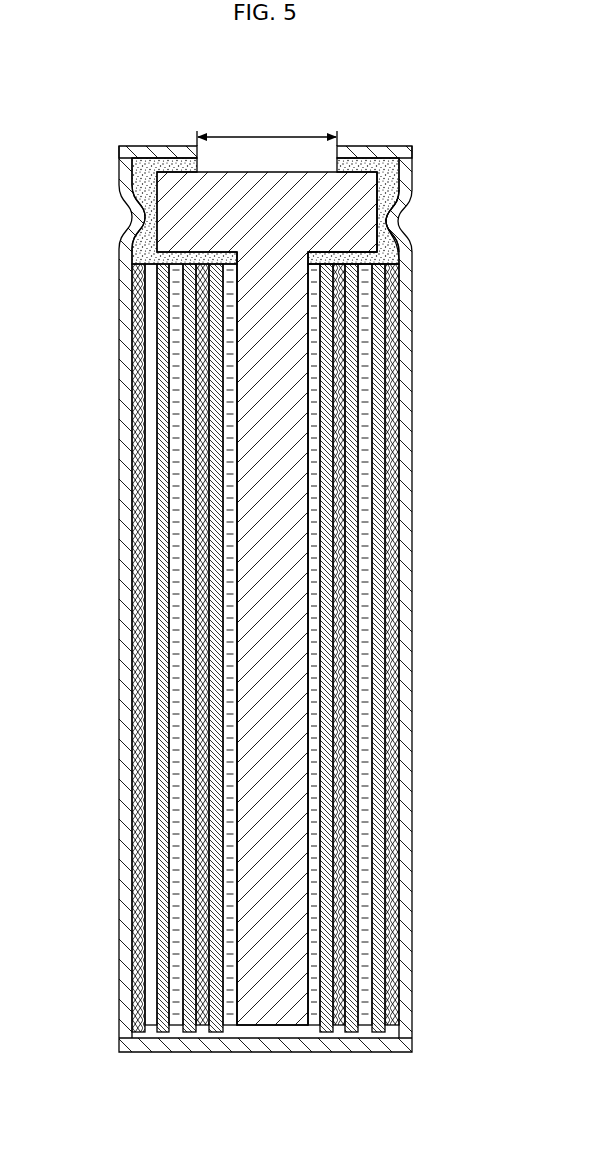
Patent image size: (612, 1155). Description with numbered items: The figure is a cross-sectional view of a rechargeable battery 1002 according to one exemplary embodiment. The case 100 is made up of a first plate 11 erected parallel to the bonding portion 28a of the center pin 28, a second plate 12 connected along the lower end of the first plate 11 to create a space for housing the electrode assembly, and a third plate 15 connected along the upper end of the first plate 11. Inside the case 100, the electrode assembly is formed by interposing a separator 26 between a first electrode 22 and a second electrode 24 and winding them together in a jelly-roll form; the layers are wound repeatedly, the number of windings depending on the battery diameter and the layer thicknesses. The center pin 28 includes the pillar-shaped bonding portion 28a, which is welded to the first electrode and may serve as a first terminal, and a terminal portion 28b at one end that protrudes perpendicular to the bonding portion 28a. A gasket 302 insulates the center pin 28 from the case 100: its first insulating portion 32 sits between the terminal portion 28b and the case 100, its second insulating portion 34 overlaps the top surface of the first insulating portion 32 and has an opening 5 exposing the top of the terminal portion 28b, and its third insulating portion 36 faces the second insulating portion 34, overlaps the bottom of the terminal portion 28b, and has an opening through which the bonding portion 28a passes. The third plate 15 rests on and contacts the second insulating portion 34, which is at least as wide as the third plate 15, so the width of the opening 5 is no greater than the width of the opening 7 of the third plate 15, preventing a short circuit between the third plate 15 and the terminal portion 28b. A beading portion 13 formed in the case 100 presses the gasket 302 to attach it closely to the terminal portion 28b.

The rechargeable battery 1002 is at (293, 60).
The case 100 is at (70, 150).
The first plate 11 is at (122, 283).
The second plate 12 is at (117, 1050).
The beading portion 13 is at (130, 217).
The third plate 15 is at (124, 140).
The opening 5 is at (198, 165).
The opening 7 is at (198, 170).
The gasket 302 is at (312, 93).
The first insulating portion 32 is at (387, 242).
The second insulating portion 34 is at (354, 162).
The third insulating portion 36 is at (313, 253).
The center pin 28 is at (476, 265).
The bonding portion 28a is at (270, 310).
The terminal portion 28b is at (352, 237).
The first electrode 22 is at (162, 1028).
The second electrode 24 is at (160, 978).
The separator 26 is at (140, 936).